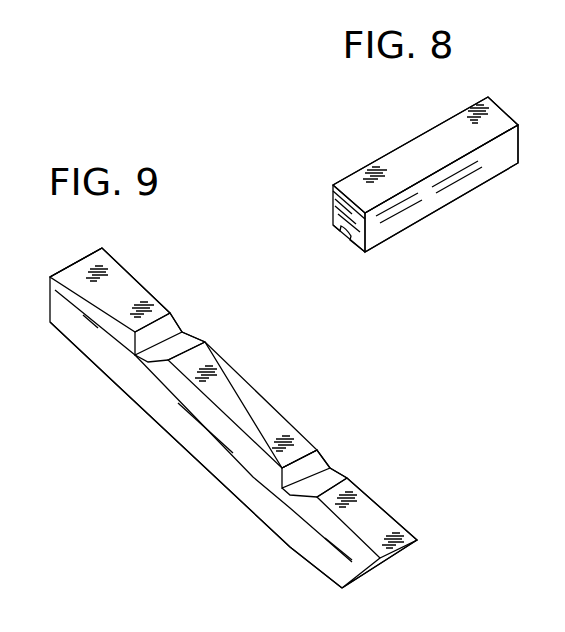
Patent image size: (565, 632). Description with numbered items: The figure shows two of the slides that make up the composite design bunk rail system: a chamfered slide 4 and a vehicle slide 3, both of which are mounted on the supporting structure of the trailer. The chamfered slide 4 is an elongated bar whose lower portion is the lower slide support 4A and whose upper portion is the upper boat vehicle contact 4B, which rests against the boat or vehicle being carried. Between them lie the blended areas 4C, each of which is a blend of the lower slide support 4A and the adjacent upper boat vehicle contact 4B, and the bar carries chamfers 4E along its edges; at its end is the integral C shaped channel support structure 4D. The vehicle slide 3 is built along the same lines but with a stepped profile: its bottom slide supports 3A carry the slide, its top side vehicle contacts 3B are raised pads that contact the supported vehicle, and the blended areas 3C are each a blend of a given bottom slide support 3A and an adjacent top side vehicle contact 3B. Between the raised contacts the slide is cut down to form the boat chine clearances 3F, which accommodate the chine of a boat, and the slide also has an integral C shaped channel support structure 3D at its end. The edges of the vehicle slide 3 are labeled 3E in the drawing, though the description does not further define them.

In FIG. 8, the chamfered slide 4 is at (457, 130).
In FIG. 8, the lower slide support 4A is at (487, 177).
In FIG. 8, the upper boat vehicle contact 4B is at (395, 163).
In FIG. 8, the blended area 4C is at (447, 180).
In FIG. 8, the integral C shaped channel support structure 4D is at (345, 233).
In FIG. 8, the chamfer 4E is at (427, 132).
In FIG. 9, the vehicle slide 3 is at (285, 420).
In FIG. 9, the bottom slide support 3A is at (100, 358).
In FIG. 9, the top side vehicle contact 3B is at (135, 295).
In FIG. 9, the blended area 3C is at (95, 323).
In FIG. 9, the integral C shaped channel support structure 3D is at (372, 568).
In FIG. 9, the edge 3E is at (70, 268).
In FIG. 9, the boat chine clearance 3F is at (185, 330).